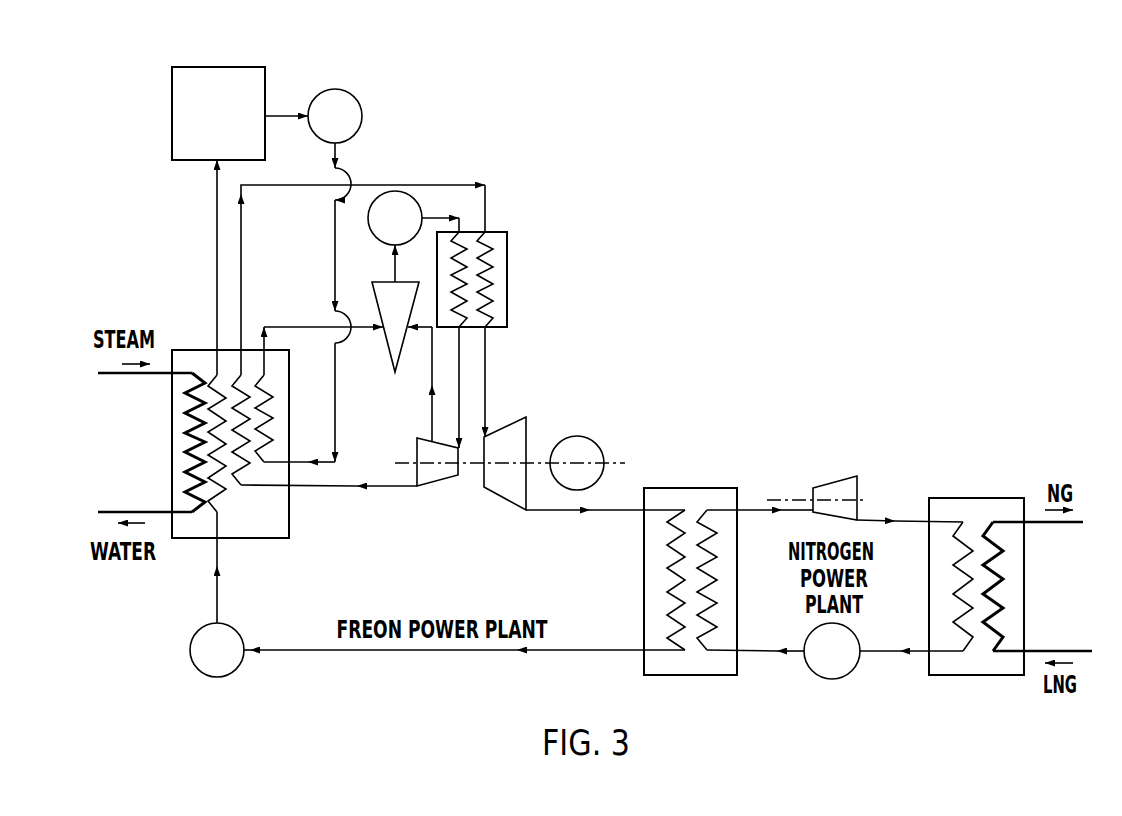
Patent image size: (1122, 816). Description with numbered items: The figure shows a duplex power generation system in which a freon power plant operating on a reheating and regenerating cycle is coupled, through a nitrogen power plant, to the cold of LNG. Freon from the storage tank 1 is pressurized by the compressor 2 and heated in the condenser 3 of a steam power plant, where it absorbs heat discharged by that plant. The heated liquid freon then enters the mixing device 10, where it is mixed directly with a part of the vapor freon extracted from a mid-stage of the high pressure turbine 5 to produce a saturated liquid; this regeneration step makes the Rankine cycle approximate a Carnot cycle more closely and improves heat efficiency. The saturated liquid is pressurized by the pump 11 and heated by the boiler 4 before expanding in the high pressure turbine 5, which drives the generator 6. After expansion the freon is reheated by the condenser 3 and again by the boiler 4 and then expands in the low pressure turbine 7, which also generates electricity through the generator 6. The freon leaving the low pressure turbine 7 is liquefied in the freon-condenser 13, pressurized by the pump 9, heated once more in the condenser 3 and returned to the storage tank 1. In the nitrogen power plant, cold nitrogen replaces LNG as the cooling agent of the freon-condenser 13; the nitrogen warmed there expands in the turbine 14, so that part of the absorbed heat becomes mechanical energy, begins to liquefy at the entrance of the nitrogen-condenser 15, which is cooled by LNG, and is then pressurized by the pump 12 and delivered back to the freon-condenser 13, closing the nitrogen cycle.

The storage tank 1 is at (218, 97).
The compressor 2 is at (335, 99).
The condenser of a steam power plant 3 is at (216, 444).
The boiler 4 is at (484, 279).
The high pressure turbine 5 is at (437, 481).
The generator 6 is at (577, 447).
The low pressure turbine 7 is at (505, 476).
The pump 9 is at (202, 650).
The mixing device 10 is at (395, 346).
The pump 11 is at (411, 214).
The pump 12 is at (832, 668).
The freon-condenser 13 is at (690, 600).
The turbine 14 is at (834, 481).
The nitrogen-condenser 15 is at (976, 567).